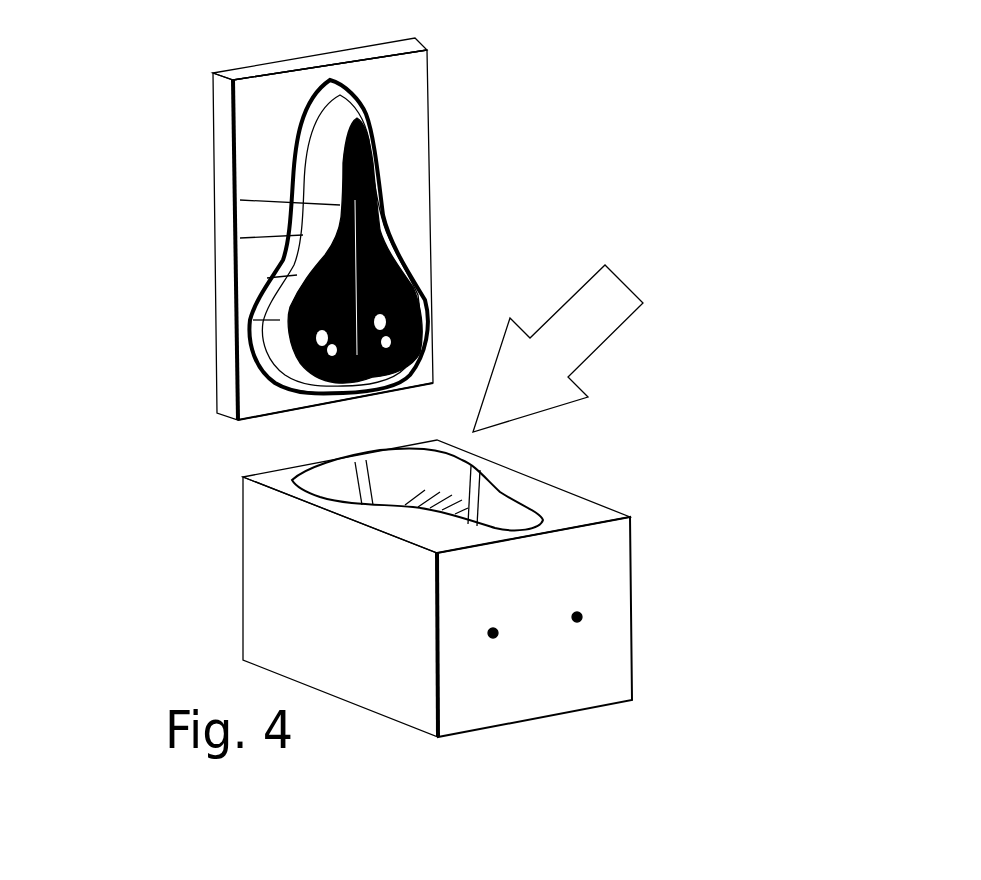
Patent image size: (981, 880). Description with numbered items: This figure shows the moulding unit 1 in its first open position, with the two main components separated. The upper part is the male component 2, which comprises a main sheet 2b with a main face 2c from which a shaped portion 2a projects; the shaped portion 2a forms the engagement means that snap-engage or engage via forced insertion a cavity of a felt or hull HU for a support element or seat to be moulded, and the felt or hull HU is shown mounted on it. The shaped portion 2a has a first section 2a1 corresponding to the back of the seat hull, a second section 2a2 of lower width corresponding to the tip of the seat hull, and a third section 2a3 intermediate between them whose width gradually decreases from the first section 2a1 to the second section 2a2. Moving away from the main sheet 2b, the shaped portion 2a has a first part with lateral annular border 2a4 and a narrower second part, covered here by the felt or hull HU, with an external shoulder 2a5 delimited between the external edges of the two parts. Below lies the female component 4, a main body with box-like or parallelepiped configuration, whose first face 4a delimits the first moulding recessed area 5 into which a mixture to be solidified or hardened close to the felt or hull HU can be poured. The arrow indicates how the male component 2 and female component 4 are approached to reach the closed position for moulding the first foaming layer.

The moulding unit 1 is at (195, 317).
The male component 2 is at (225, 163).
The shaped portion 2a is at (365, 103).
The first section 2a1 is at (290, 380).
The second section 2a2 is at (320, 120).
The third section 2a3 is at (303, 235).
The first part with lateral annular border 2a4 is at (320, 153).
The external shoulder 2a5 is at (340, 205).
The main sheet 2b is at (275, 93).
The main face 2c is at (257, 392).
The felt or hull HU is at (393, 260).
The female component 4 is at (617, 660).
The first face 4a is at (380, 520).
The first moulding recessed area 5 is at (462, 505).